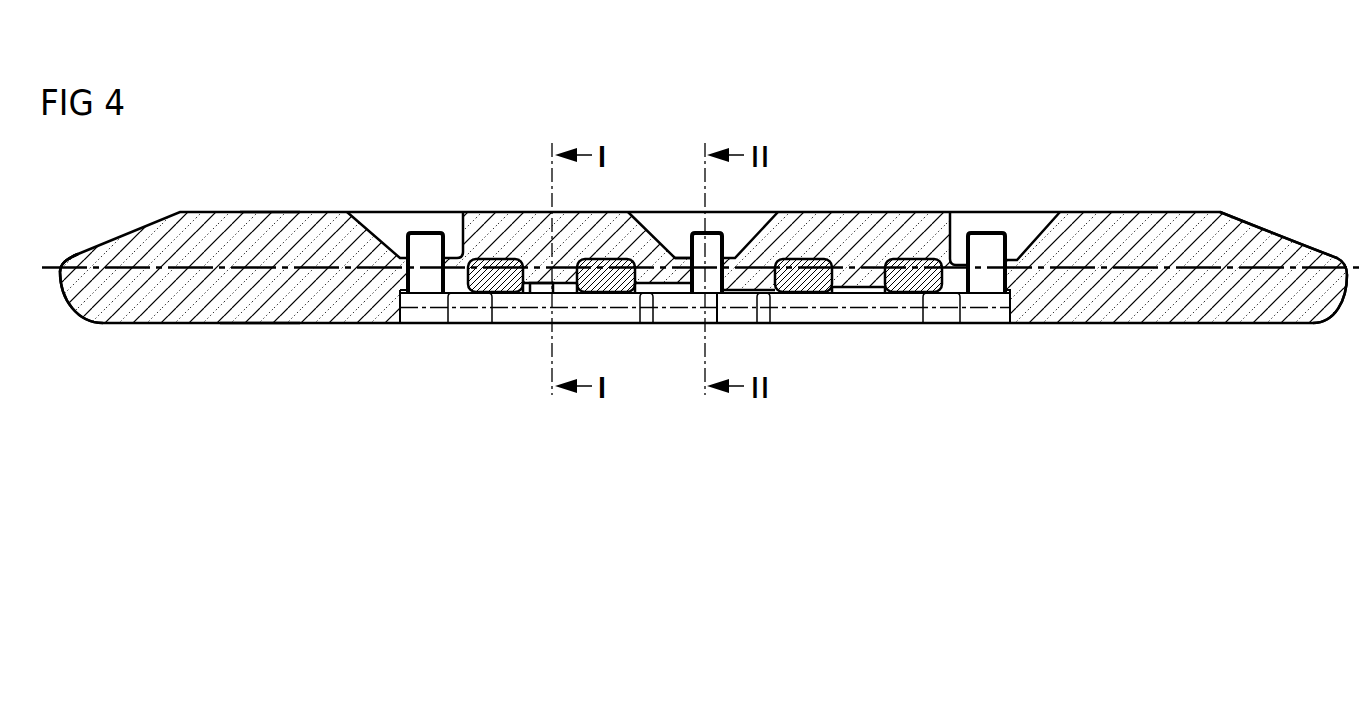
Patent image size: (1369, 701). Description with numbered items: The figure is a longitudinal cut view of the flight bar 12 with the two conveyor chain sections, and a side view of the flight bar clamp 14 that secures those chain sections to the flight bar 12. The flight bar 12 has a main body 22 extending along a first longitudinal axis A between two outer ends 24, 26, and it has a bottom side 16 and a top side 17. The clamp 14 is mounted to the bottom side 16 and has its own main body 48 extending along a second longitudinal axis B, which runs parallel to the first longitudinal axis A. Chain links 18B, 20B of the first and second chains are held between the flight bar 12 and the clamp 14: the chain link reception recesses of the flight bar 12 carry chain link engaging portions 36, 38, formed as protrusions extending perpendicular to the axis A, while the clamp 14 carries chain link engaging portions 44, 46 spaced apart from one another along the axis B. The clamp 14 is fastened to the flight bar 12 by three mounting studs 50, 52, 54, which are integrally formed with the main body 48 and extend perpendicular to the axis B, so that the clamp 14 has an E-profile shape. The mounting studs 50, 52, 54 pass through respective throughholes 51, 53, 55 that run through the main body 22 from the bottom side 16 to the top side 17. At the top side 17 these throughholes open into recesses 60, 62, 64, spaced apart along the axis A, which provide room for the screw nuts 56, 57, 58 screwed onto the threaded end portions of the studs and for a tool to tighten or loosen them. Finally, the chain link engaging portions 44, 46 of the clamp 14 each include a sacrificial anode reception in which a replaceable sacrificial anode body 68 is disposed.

The flight bar 12 is at (202, 212).
The flight bar clamp 14 is at (502, 317).
The bottom side 16 is at (258, 323).
The top side 17 is at (268, 212).
The chain link 18B is at (920, 293).
The chain link 20B is at (607, 297).
The main body 22 is at (608, 212).
The outer end 24 is at (1332, 263).
The outer end 26 is at (72, 282).
The chain link engaging portion 36 is at (867, 268).
The chain link engaging portion 38 is at (547, 273).
The chain link engaging portion 44 is at (853, 289).
The chain link engaging portion 46 is at (557, 297).
The main body 48 is at (742, 315).
The mounting stud 50 is at (422, 231).
The throughhole 51 is at (375, 300).
The mounting stud 52 is at (717, 223).
The throughhole 53 is at (717, 297).
The mounting stud 54 is at (985, 231).
The throughhole 55 is at (1006, 283).
The screw nut 56 is at (397, 247).
The screw nut 57 is at (679, 256).
The screw nut 58 is at (1012, 255).
The recess 60 is at (448, 250).
The recess 62 is at (770, 222).
The recess 64 is at (957, 223).
The sacrificial anode body 68 is at (532, 296).
The first longitudinal axis A is at (83, 265).
The second longitudinal axis B is at (685, 313).